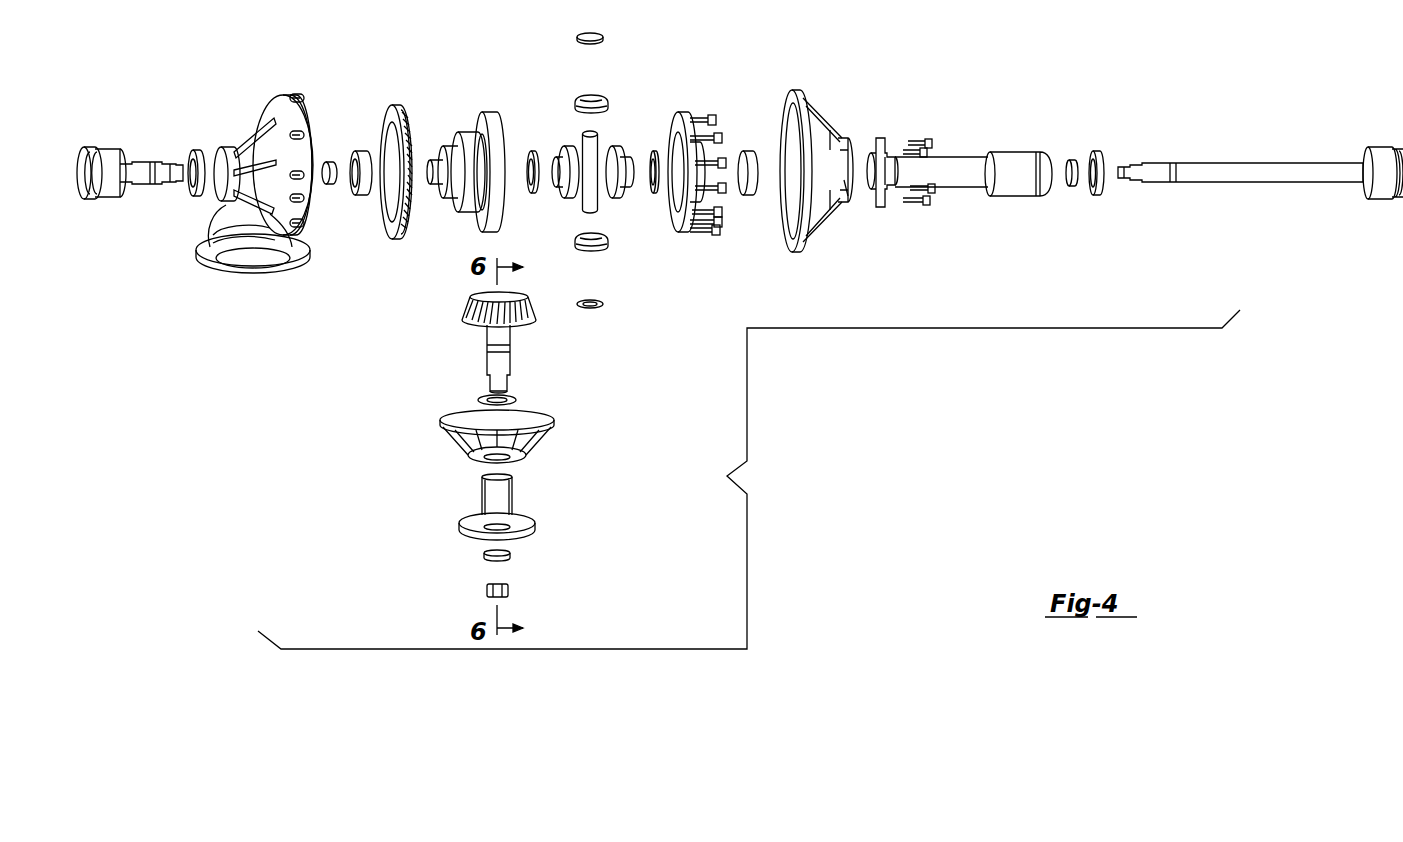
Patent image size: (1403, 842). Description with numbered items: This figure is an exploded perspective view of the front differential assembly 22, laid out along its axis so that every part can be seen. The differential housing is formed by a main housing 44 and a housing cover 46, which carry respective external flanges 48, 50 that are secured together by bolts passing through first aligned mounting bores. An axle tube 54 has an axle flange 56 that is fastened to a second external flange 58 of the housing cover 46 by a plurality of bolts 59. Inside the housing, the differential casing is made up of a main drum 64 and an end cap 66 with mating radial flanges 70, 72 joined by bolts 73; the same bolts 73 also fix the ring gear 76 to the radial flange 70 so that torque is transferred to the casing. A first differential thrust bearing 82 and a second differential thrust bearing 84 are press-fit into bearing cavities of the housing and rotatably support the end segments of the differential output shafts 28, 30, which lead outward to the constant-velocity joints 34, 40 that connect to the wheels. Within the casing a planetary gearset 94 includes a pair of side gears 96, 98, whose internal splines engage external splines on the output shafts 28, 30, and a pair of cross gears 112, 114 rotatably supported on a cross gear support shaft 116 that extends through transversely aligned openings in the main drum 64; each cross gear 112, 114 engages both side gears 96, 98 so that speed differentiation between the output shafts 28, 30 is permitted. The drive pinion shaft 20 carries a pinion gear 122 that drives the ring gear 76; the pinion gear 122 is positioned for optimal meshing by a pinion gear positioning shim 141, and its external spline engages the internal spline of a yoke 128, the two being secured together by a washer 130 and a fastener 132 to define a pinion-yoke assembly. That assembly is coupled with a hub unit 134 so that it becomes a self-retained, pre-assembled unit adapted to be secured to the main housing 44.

The drive pinion shaft 20 is at (487, 364).
The front differential assembly 22 is at (922, 437).
The differential output shaft 28 is at (151, 163).
The differential output shaft 30 is at (1236, 163).
The constant-velocity joint 34 is at (106, 150).
The constant-velocity joint 40 is at (1372, 147).
The main housing 44 is at (264, 140).
The housing cover 46 is at (818, 118).
The external flange 48 is at (294, 95).
The external flange 50 is at (832, 136).
The axle tube 54 is at (952, 150).
The axle flange 56 is at (878, 138).
The second external flange 58 is at (848, 195).
The bolts 59 is at (926, 139).
The main drum 64 is at (458, 131).
The end cap 66 is at (718, 169).
The radial flange 70 is at (488, 113).
The radial flange 72 is at (680, 235).
The bolts 73 is at (722, 230).
The ring gear 76 is at (398, 106).
The first differential thrust bearing 82 is at (359, 150).
The second differential thrust bearing 84 is at (746, 151).
The planetary gearset 94 is at (608, 54).
The side gear 96 is at (569, 198).
The side gear 98 is at (614, 198).
The cross gear 112 is at (585, 96).
The cross gear 114 is at (580, 250).
The cross gear support shaft 116 is at (598, 132).
The pinion gear 122 is at (464, 326).
The yoke 128 is at (536, 528).
The washer 130 is at (512, 556).
The fastener 132 is at (509, 591).
The hub unit 134 is at (548, 418).
The pinion gear positioning shim 141 is at (516, 400).